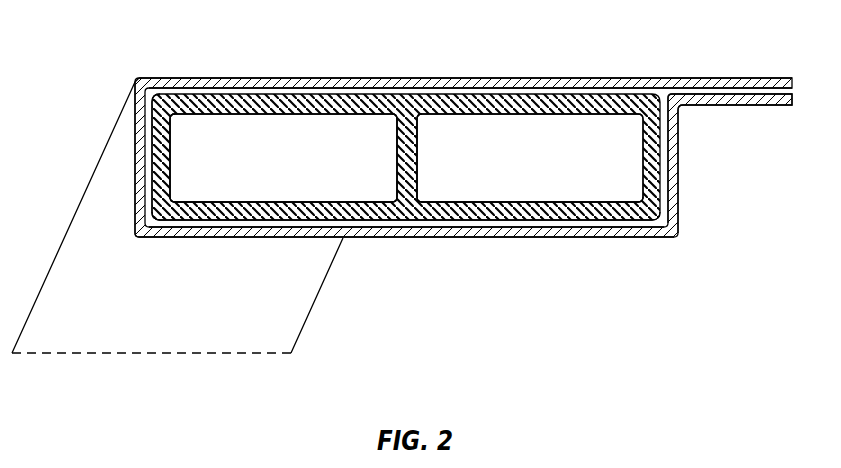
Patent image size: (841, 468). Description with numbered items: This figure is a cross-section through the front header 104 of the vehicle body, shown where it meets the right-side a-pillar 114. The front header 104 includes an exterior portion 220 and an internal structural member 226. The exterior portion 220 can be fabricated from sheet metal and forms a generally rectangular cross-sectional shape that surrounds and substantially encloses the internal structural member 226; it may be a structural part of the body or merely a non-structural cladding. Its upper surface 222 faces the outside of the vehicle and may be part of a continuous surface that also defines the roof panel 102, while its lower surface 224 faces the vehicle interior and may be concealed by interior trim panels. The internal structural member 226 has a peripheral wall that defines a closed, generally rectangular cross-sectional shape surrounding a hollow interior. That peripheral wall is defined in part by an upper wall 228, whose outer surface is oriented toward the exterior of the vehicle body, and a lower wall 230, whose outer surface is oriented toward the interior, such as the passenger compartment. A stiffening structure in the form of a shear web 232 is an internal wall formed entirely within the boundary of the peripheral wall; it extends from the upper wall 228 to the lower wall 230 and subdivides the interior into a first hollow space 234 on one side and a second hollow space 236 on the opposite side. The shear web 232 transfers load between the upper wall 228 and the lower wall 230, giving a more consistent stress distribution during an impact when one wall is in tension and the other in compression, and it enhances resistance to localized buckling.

The roof panel 102 is at (742, 78).
The front header 104 is at (159, 58).
The right-side a-pillar 114 is at (68, 227).
The exterior portion 220 is at (678, 146).
The upper surface 222 is at (378, 77).
The lower surface 224 is at (413, 237).
The internal structural member 226 is at (575, 221).
The upper wall 228 is at (328, 114).
The lower wall 230 is at (182, 202).
The shear web 232 is at (415, 188).
The first hollow space 234 is at (295, 167).
The second hollow space 236 is at (548, 167).